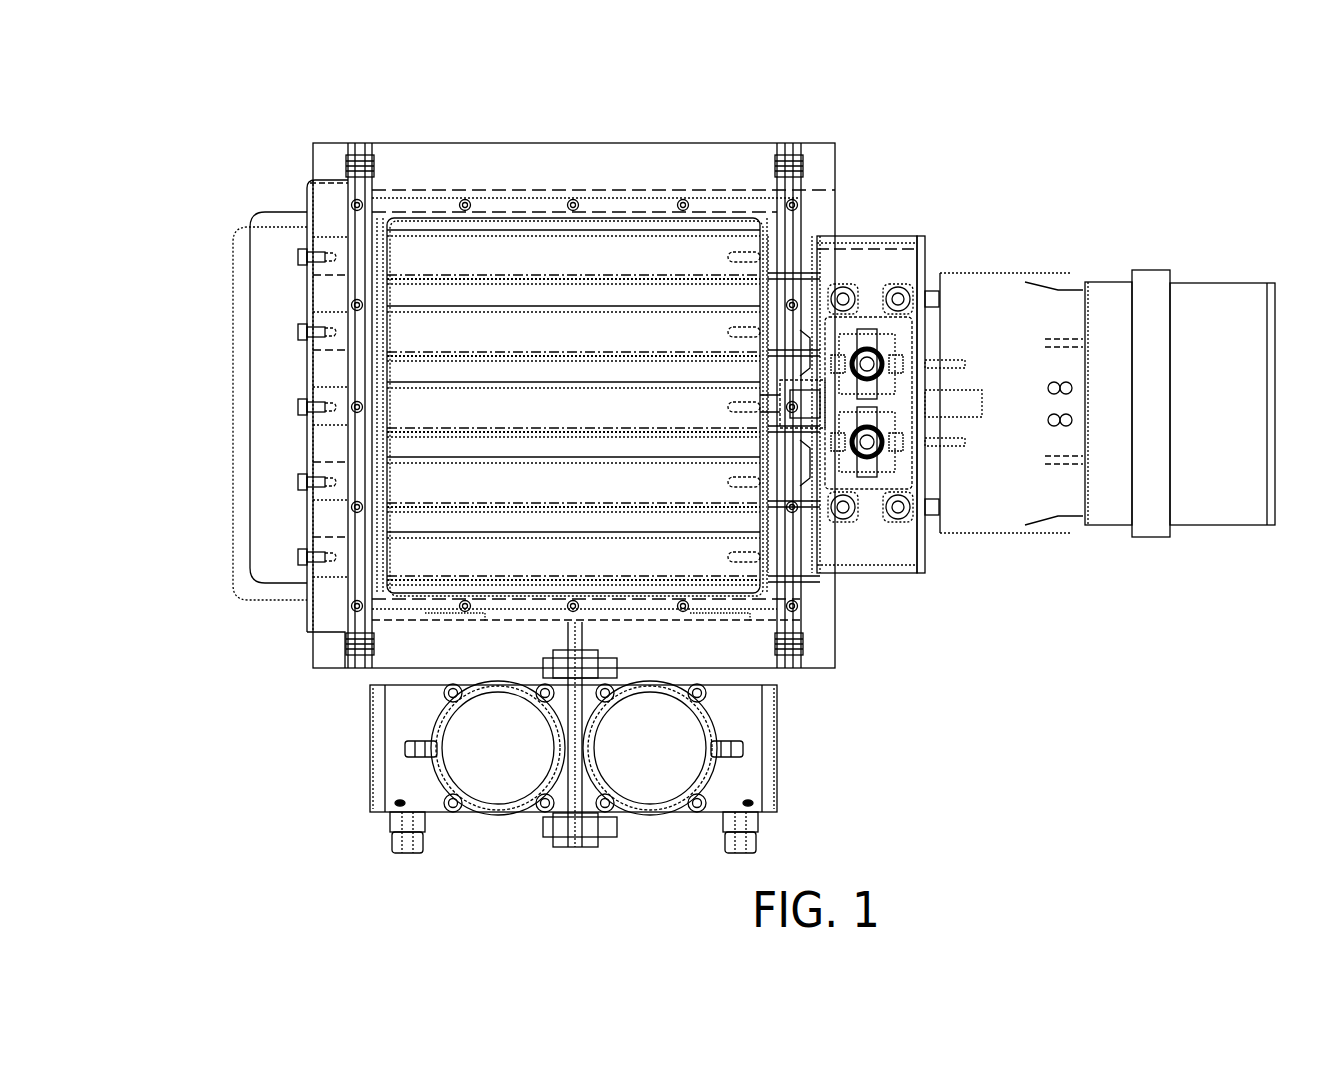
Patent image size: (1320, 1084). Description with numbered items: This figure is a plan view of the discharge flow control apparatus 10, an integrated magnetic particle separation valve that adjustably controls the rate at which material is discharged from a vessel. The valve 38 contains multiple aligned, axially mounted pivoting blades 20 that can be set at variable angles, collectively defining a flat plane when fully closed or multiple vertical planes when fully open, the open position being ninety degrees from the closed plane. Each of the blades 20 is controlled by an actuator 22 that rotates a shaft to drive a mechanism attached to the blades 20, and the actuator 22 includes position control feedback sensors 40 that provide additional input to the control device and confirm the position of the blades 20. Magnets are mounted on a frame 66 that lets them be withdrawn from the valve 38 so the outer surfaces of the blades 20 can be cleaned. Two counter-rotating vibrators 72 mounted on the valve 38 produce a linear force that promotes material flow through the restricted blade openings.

The discharge flow control apparatus 10 is at (880, 150).
The pivoting blades 20 is at (670, 100).
The actuator 22 is at (1210, 283).
The valve 38 is at (218, 140).
The position control feedback sensors 40 is at (740, 564).
The frame 66 is at (302, 537).
The counter-rotating vibrators 72 is at (710, 727).